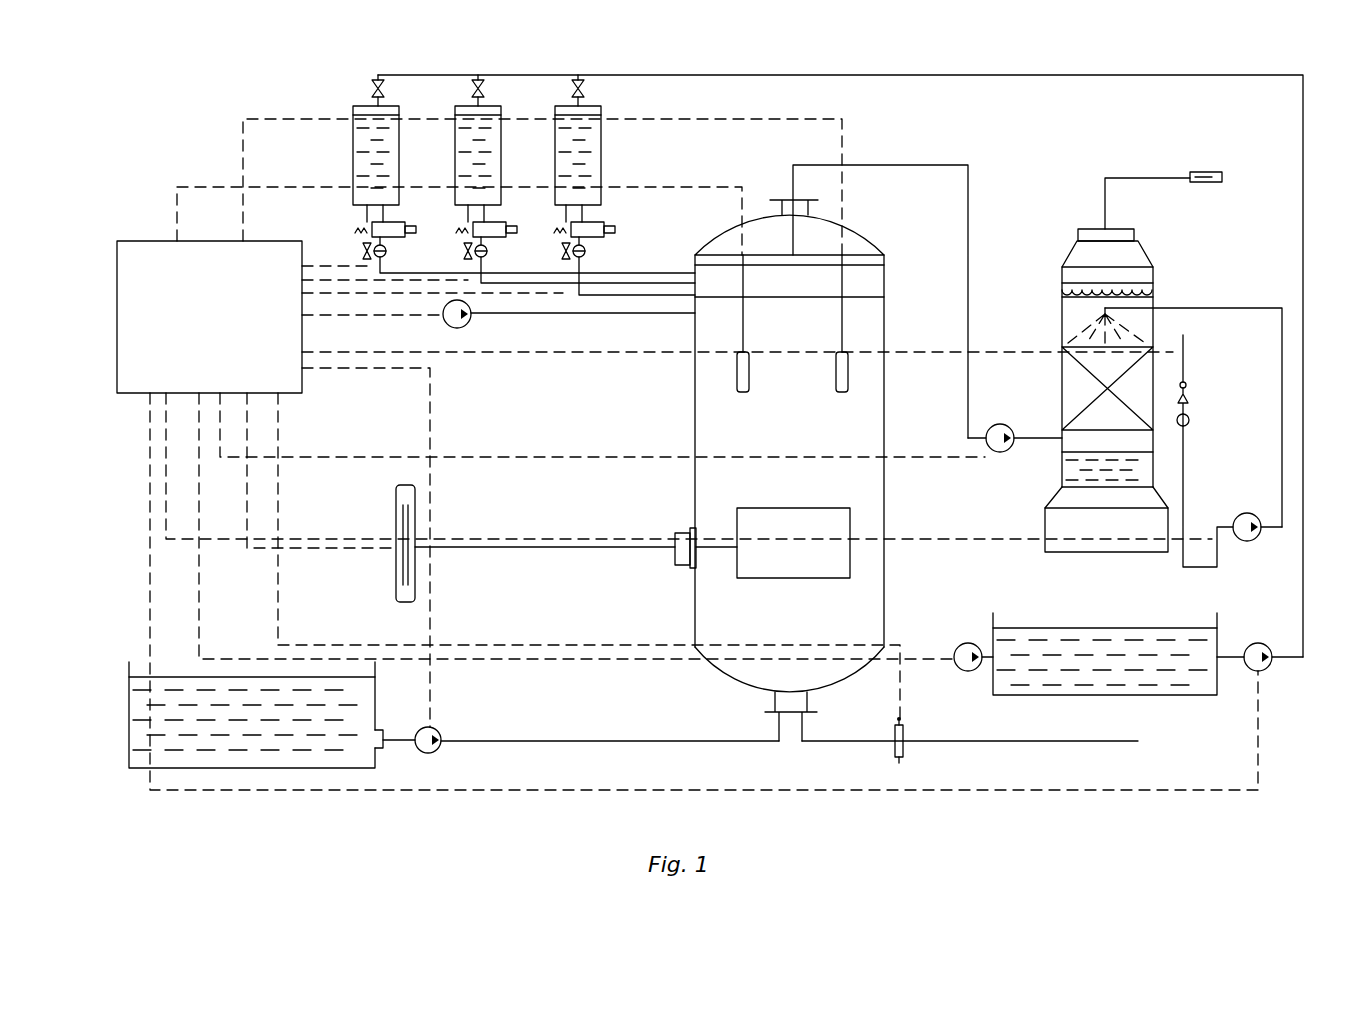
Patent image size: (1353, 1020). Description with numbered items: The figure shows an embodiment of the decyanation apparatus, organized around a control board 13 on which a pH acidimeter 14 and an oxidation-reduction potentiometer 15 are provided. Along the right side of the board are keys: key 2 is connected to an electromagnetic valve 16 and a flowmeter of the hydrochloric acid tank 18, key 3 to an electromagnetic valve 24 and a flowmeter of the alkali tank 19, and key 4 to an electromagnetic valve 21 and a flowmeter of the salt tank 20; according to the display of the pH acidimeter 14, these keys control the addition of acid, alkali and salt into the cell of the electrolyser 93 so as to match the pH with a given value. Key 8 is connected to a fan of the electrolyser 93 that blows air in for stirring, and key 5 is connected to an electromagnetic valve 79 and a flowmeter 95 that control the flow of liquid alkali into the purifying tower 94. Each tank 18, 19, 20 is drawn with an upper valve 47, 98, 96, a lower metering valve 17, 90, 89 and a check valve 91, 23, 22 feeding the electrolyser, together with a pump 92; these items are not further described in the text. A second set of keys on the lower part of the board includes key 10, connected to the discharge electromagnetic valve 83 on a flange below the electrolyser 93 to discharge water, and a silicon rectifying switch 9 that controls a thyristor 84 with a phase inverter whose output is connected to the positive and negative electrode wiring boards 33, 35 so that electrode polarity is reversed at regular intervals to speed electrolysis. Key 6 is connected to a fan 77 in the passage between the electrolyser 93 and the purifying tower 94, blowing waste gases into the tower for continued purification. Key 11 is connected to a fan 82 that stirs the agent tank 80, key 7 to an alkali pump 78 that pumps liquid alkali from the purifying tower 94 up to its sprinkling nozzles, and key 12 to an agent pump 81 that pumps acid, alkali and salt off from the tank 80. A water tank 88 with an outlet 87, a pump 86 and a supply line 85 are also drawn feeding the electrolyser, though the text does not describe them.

The control board 13 is at (142, 250).
The pH acidimeter 14 is at (170, 243).
The oxidation-reduction potentiometer 15 is at (233, 243).
The salt tank 20 is at (365, 137).
The alkali tank 19 is at (466, 113).
The hydrochloric acid tank 18 is at (556, 115).
The reservoir fill valve 96 is at (378, 80).
The reservoir fill valve 98 is at (484, 84).
The reservoir fill valve 47 is at (585, 82).
The electromagnetic valve 21 is at (373, 227).
The electromagnetic valve 24 is at (474, 227).
The electromagnetic valve 16 is at (573, 227).
The metering valve 89 is at (364, 252).
The metering valve 90 is at (465, 252).
The metering valve 17 is at (563, 252).
The check valve 22 is at (386, 251).
The check valve 23 is at (487, 251).
The check valve 91 is at (586, 251).
The pump 92 is at (460, 328).
The electrolyser 93 is at (885, 578).
The positive electrode wiring board 33 is at (675, 533).
The negative electrode wiring board 35 is at (675, 565).
The thyristor 84 is at (415, 585).
The water tank 88 is at (286, 752).
The tank outlet 87 is at (385, 745).
The water pump 86 is at (425, 755).
The water supply line 85 is at (551, 742).
The discharge electromagnetic valve 83 is at (905, 750).
The fan 82 is at (968, 671).
The agent tank 80 is at (1210, 638).
The agent pump 81 is at (1264, 643).
The purifying tower 94 is at (1044, 552).
The fan 77 is at (1005, 425).
The alkali pump 78 is at (1249, 513).
The electromagnetic valve 79 is at (1187, 383).
The flowmeter 95 is at (1190, 418).
The key 4 is at (325, 264).
The key 3 is at (375, 282).
The key 2 is at (423, 299).
The key 8 is at (363, 317).
The key 5 is at (728, 351).
The key 12 is at (697, 579).
The key 7 is at (685, 454).
The key 11 is at (572, 514).
The key 6 is at (599, 413).
The silicon rectifying switch 9 is at (318, 458).
The key 10 is at (583, 543).